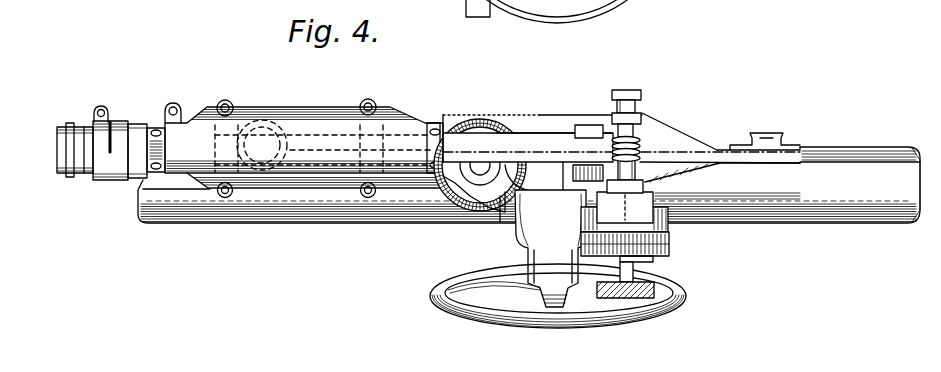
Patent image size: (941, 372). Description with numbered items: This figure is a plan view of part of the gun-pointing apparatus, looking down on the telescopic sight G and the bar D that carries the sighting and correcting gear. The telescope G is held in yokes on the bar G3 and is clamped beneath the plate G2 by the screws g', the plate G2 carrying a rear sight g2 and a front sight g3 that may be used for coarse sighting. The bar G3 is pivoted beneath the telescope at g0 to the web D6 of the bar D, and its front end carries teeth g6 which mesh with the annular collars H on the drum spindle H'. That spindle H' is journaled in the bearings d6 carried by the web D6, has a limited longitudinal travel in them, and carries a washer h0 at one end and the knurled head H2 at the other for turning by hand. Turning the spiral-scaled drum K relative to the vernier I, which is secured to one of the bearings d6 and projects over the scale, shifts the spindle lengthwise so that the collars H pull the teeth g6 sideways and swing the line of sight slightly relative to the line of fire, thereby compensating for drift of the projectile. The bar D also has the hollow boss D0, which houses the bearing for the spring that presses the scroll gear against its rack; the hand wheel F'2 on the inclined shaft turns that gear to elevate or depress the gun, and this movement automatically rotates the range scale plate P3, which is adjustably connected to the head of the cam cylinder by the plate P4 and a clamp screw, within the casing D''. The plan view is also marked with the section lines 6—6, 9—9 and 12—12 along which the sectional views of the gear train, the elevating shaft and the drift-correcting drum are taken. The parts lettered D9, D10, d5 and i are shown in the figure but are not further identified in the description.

The telescopic sight G is at (102, 137).
The rear sight g2 is at (156, 127).
The screws g' is at (283, 167).
The pivot g0 is at (262, 145).
The front sight g3 is at (434, 126).
The plate G2 is at (327, 175).
The bar G3 is at (553, 140).
The bar D is at (529, 199).
The web D6 is at (678, 118).
The lug D9 is at (786, 132).
The plate D10 is at (641, 152).
The casing D'' is at (509, 226).
The hollow boss D0 is at (550, 248).
The block d5 is at (590, 124).
The bearings d6 is at (643, 116).
The teeth g6 is at (611, 152).
The washer h0 is at (630, 90).
The drum spindle H' is at (643, 91).
The annular collars H is at (633, 146).
The knurled head H2 is at (655, 289).
The vernier I is at (625, 207).
The index mark i is at (631, 207).
The drum K is at (670, 240).
The hand wheel F'2 is at (578, 296).
The range scale plate P3 is at (437, 197).
The plate P4 is at (463, 197).
The section line 6— 6 is at (437, 42).
The section line 9— 9 is at (510, 53).
The section line 12— 12 is at (627, 340).